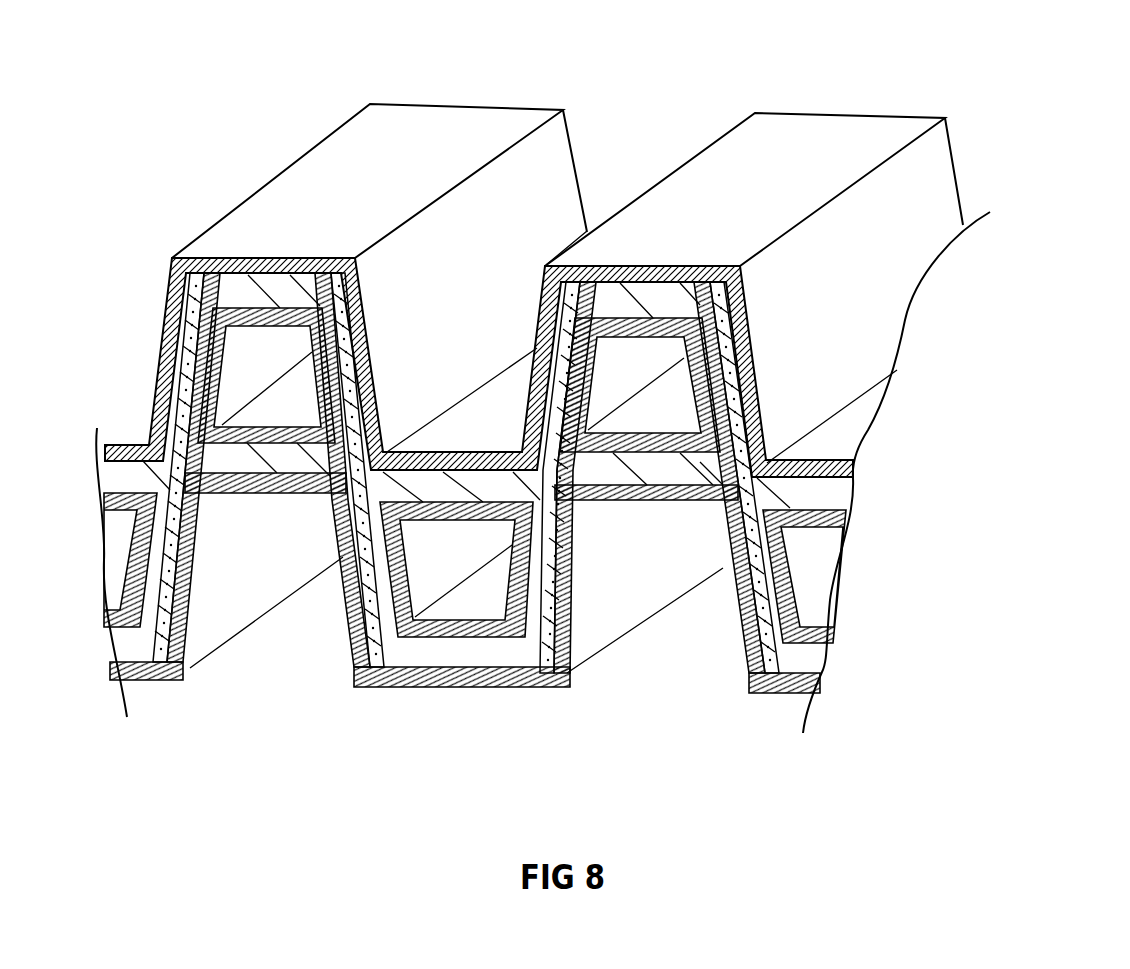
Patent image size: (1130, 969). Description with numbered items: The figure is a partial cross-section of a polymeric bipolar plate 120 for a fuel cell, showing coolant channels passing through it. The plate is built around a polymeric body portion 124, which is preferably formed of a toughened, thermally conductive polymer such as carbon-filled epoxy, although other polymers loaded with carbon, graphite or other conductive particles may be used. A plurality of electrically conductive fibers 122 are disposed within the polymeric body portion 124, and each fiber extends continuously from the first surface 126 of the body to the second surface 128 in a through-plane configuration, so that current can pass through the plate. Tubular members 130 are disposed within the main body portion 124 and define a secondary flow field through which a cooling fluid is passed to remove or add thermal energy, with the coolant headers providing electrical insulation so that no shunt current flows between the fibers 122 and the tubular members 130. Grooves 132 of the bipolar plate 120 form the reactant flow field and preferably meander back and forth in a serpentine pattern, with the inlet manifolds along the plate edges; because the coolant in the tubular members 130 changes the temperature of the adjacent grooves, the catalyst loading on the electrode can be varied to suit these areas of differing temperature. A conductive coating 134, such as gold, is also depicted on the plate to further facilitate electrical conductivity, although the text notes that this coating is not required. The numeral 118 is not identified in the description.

The inner fiber layer 118 is at (720, 337).
The polymeric bipolar plate 120 is at (1018, 148).
The electrically conductive fibers 122 is at (393, 670).
The polymeric body portion 124 is at (500, 660).
The first surface 126 is at (825, 122).
The second surface 128 is at (434, 690).
The tubular members 130 is at (337, 313).
The grooves 132 is at (507, 250).
The conductive coating 134 is at (170, 259).